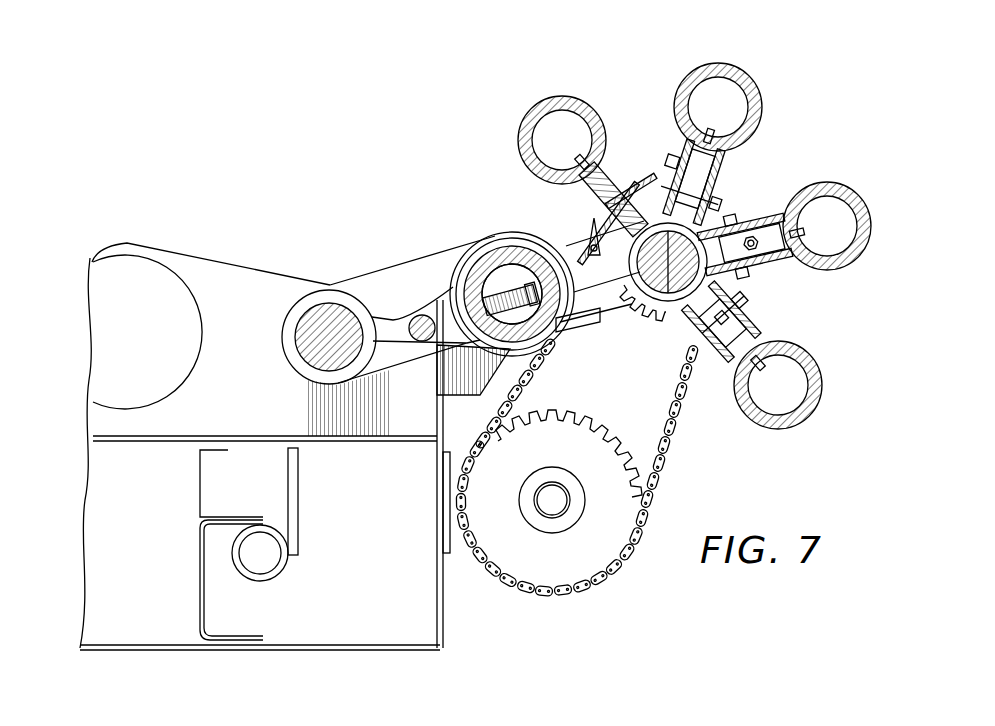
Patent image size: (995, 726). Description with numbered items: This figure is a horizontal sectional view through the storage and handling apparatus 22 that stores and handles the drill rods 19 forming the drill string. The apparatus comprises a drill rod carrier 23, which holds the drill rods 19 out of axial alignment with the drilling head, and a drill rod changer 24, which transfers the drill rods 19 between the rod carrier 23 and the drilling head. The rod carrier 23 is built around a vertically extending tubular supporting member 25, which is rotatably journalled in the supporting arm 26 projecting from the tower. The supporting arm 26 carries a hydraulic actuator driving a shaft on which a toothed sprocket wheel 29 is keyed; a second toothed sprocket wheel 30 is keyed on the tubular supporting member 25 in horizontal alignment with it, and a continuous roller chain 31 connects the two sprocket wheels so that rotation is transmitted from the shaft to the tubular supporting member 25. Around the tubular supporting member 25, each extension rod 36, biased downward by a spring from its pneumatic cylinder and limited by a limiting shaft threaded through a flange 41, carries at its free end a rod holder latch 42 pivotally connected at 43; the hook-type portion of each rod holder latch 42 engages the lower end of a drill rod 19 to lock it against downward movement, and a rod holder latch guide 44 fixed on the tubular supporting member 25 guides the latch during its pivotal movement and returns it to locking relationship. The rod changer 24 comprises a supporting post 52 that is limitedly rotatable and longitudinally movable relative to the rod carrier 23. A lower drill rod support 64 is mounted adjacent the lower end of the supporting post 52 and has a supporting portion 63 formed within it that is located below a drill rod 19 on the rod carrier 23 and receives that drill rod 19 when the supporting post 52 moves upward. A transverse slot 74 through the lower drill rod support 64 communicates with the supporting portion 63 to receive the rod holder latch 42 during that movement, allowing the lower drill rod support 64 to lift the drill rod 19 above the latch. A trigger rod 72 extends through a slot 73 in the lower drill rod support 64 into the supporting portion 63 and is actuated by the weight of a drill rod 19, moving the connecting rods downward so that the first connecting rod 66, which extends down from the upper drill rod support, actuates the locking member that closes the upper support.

The drill rod 19 is at (561, 98).
The storage and handling apparatus 22 is at (632, 242).
The drill rod carrier 23 is at (686, 266).
The drill rod changer 24 is at (440, 301).
The tubular supporting member 25 is at (660, 228).
The supporting arm 26 is at (445, 610).
The toothed sprocket wheel 29 is at (572, 456).
The toothed sprocket wheel 30 is at (662, 320).
The continuous roller chain 31 is at (680, 455).
The extension rod 36 is at (748, 292).
The flange 41 is at (699, 372).
The rod holder latch 42 is at (687, 284).
The pivotal connection 43 is at (668, 160).
The rod holder latch guide 44 is at (603, 207).
The supporting post 52 is at (333, 325).
The supporting portion 63 is at (487, 265).
The lower drill rod support 64 is at (292, 338).
The first connecting rod 66 is at (417, 345).
The trigger rod 72 is at (538, 330).
The slot 73 is at (484, 365).
The transverse slot 74 is at (568, 320).